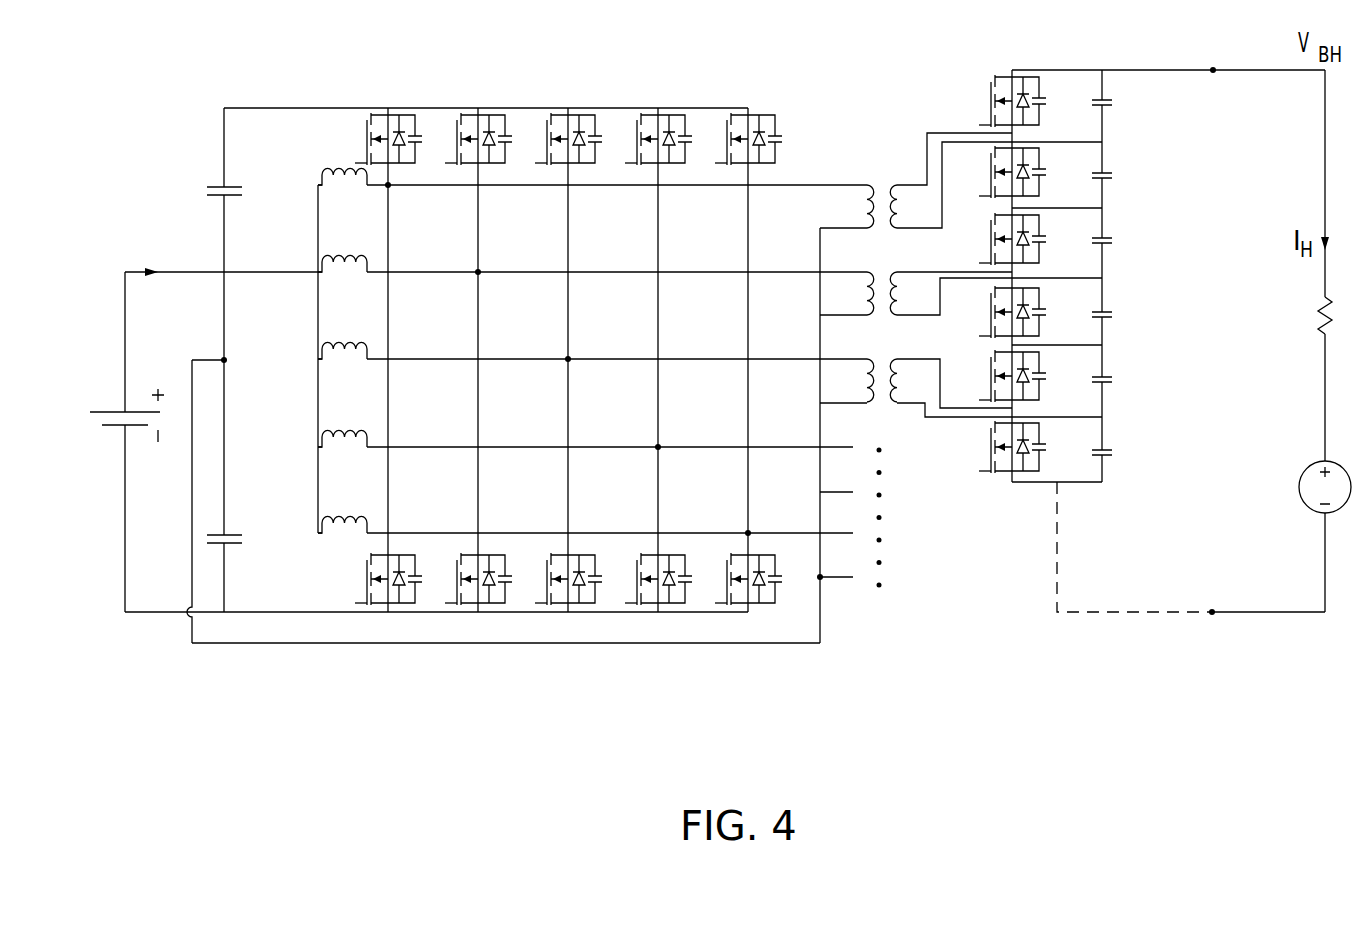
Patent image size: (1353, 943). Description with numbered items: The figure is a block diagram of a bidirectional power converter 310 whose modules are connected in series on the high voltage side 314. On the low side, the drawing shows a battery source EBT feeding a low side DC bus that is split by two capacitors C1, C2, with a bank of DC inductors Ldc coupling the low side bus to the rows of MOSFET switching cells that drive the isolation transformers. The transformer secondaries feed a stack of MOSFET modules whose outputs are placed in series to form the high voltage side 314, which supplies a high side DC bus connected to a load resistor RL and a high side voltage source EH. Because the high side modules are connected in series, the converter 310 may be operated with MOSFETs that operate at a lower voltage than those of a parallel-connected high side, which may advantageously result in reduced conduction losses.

The converter 310 is at (568, 666).
The high voltage side 314 is at (1186, 72).
The low side capacitor C1 is at (228, 168).
The low side capacitor C2 is at (227, 516).
The DC inductors Ldc is at (342, 350).
The battery EBT is at (123, 403).
The load resistor RL is at (1308, 315).
The high side voltage source EH is at (1308, 487).